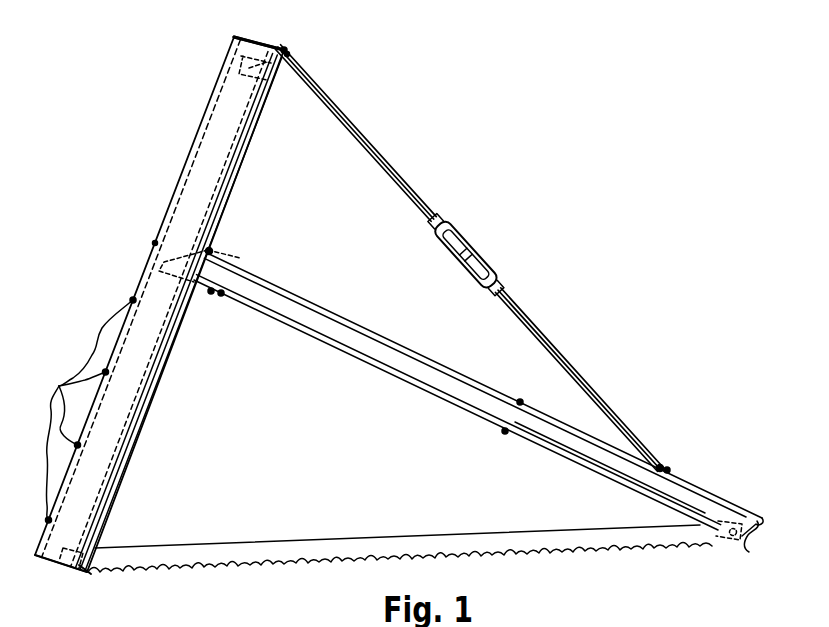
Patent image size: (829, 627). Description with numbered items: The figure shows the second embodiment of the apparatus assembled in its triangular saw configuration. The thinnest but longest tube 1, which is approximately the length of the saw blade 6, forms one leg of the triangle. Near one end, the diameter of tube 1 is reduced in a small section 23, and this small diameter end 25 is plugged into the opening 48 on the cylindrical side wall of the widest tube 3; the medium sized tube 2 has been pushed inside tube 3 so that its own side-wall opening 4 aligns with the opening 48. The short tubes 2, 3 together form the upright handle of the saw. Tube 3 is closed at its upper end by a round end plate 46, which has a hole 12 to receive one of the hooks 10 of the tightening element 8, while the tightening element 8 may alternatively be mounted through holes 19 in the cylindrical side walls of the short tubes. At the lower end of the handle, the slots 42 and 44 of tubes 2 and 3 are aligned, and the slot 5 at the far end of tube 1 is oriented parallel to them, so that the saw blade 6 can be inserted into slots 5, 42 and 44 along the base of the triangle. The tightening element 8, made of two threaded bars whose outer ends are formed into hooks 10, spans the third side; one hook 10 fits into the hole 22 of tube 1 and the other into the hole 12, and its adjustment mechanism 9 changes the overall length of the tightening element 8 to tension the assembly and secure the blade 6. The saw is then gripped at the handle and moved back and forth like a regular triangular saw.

The tube 1 is at (345, 319).
The tube 2 is at (230, 92).
The tube 3 is at (229, 205).
The opening 4 is at (240, 256).
The slot 5 is at (749, 552).
The saw blade 6 is at (320, 540).
The tightening element 8 is at (546, 333).
The adjustment mechanism 9 is at (504, 272).
The hooks 10 is at (288, 54).
The hole 12 is at (285, 49).
The holes 19 is at (80, 410).
The hole 22 is at (221, 294).
The small section 23 is at (211, 292).
The end 25 is at (155, 243).
The slot 42 is at (88, 575).
The slot 44 is at (96, 547).
The end plate 46 is at (245, 43).
The opening 48 is at (214, 252).